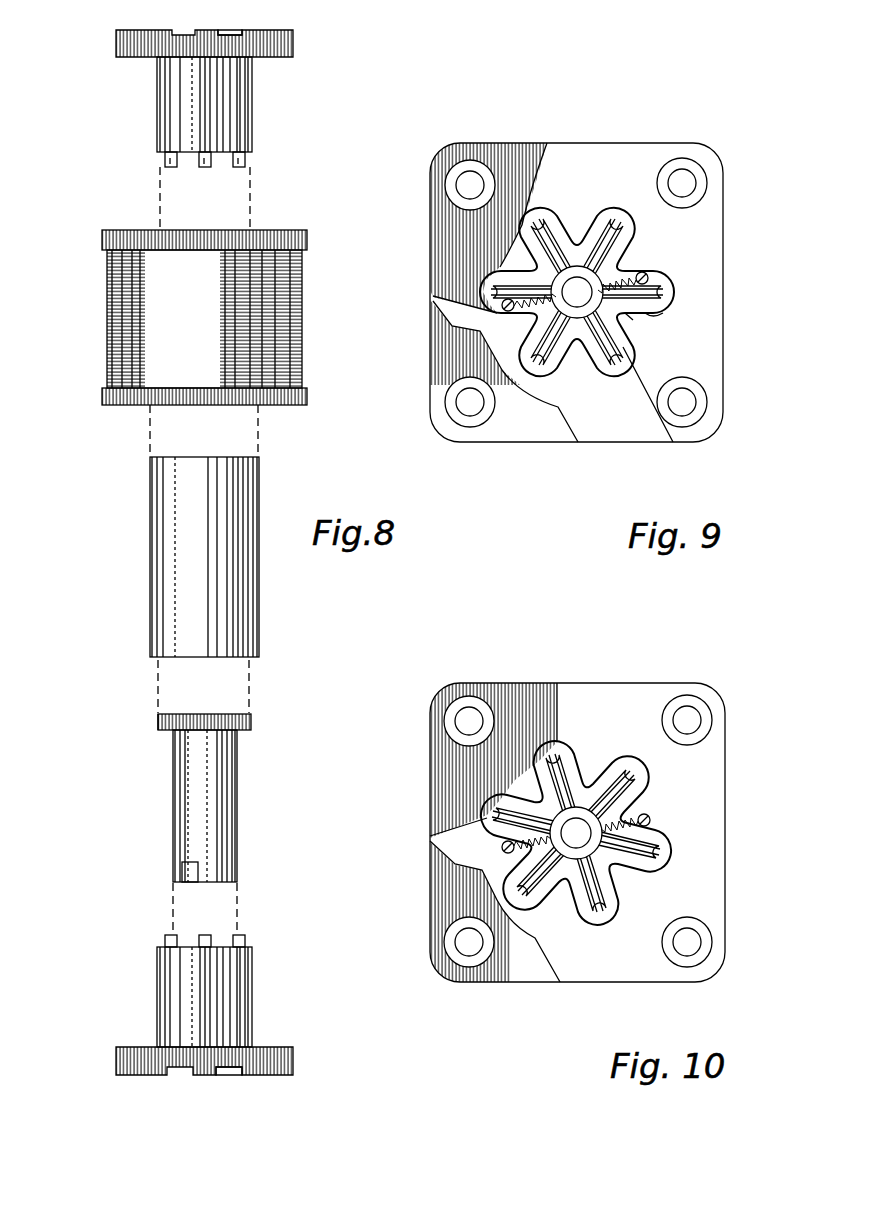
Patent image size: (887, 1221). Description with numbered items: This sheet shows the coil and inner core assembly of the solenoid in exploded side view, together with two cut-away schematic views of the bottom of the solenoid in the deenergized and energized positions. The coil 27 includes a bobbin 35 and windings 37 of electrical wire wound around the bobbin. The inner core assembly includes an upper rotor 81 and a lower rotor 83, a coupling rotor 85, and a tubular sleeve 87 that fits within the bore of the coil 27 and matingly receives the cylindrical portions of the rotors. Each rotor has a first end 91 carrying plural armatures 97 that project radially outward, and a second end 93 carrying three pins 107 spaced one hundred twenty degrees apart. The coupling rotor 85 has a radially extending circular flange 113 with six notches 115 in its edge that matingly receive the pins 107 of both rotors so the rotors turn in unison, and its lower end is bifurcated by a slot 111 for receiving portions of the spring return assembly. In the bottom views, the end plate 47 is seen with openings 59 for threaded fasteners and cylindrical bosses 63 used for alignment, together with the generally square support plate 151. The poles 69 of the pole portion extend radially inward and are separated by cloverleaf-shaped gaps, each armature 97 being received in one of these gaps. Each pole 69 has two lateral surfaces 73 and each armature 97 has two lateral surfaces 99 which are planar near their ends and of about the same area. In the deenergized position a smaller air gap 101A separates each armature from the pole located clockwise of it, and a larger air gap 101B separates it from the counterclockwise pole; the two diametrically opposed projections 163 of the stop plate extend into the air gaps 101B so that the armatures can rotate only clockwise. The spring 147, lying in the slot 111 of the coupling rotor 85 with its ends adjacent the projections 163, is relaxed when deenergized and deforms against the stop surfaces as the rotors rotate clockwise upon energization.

In FIG. 8, the coil 27 is at (107, 283).
In FIG. 8, the bobbin 35 is at (123, 230).
In FIG. 8, the windings 37 is at (107, 345).
In FIG. 9, the end plate 47 is at (625, 163).
In FIG. 10, the end plate 47 is at (647, 706).
In FIG. 10, the openings 59 is at (460, 714).
In FIG. 10, the cylindrical bosses 63 is at (481, 695).
In FIG. 9, the poles 69 is at (628, 260).
In FIG. 10, the poles 69 is at (580, 762).
In FIG. 9, the lateral surfaces 73 is at (632, 315).
In FIG. 8, the upper rotor 81 is at (160, 87).
In FIG. 8, the lower rotor 83 is at (193, 1010).
In FIG. 9, the lower rotor 83 is at (622, 220).
In FIG. 8, the coupling rotor 85 is at (207, 815).
In FIG. 8, the sleeve 87 is at (180, 547).
In FIG. 8, the first end 91 is at (180, 31).
In FIG. 8, the second end 93 is at (163, 155).
In FIG. 8, the armatures 97 is at (273, 33).
In FIG. 9, the armatures 97 is at (655, 292).
In FIG. 10, the armatures 97 is at (574, 768).
In FIG. 9, the lateral surfaces 99 is at (665, 307).
In FIG. 9, the air gap 101A is at (507, 277).
In FIG. 9, the air gap 101B is at (497, 310).
In FIG. 10, the air gap 101B is at (621, 901).
In FIG. 8, the pins 107 is at (243, 167).
In FIG. 8, the slot 111 is at (180, 868).
In FIG. 9, the slot 111 is at (553, 283).
In FIG. 8, the circular flange 113 is at (157, 721).
In FIG. 8, the notches 115 is at (205, 715).
In FIG. 9, the spring 147 is at (503, 370).
In FIG. 10, the spring 147 is at (505, 860).
In FIG. 9, the support plate 151 is at (488, 428).
In FIG. 10, the support plate 151 is at (496, 969).
In FIG. 9, the projections 163 is at (648, 277).
In FIG. 10, the projections 163 is at (659, 817).